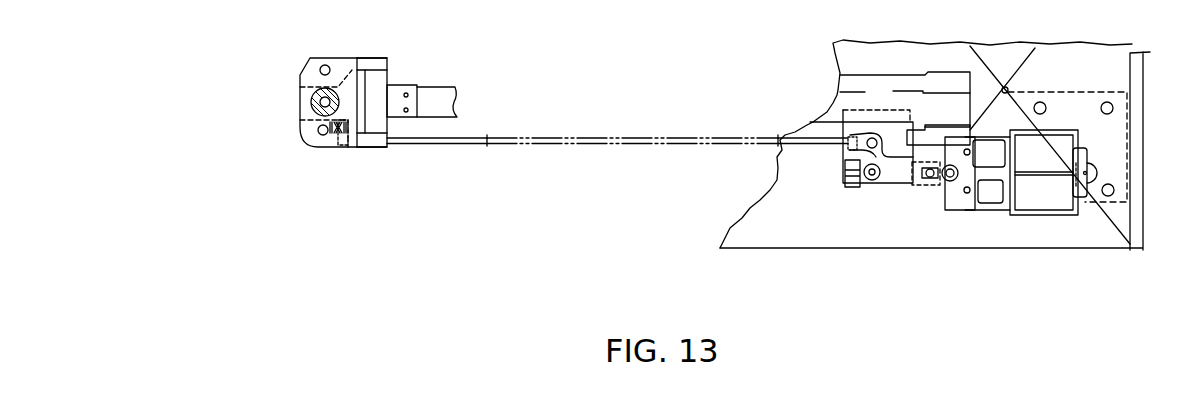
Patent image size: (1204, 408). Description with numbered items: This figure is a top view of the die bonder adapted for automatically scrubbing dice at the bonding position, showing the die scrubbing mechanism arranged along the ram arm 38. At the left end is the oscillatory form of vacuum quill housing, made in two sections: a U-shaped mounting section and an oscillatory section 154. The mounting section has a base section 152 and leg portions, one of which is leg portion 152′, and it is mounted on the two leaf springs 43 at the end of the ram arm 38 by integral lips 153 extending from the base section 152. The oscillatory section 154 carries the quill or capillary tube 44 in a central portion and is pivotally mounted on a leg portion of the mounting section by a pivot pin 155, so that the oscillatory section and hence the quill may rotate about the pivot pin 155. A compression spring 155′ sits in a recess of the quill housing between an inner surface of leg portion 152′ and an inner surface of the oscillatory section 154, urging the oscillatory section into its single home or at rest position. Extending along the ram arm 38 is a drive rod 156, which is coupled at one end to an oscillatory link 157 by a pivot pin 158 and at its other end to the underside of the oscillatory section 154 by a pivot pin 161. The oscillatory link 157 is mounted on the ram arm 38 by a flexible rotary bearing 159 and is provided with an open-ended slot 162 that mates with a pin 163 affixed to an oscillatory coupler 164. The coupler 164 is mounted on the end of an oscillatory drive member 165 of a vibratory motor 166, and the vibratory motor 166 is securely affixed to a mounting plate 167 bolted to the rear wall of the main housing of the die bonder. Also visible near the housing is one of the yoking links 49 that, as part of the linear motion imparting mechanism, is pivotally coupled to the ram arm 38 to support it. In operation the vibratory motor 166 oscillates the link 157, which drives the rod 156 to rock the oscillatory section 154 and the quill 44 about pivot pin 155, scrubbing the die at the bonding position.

The ram arm 38 is at (863, 92).
The leaf springs 43 is at (447, 88).
The capillary tube 44 is at (316, 100).
The yoking link 49 is at (918, 133).
The base section 152 is at (384, 128).
The leg portion 152′ is at (362, 147).
The integral lips 153 is at (397, 85).
The oscillatory section 154 is at (303, 90).
The pivot pin 155 is at (323, 65).
The compression spring 155′ is at (333, 135).
The drive rod 156 is at (470, 143).
The oscillatory link 157 is at (863, 190).
The pivot pin 158 is at (852, 145).
The flexible rotary bearing 159 is at (864, 175).
The pivot pin 161 is at (319, 131).
The open-ended slot 162 is at (928, 177).
The pin 163 is at (930, 180).
The oscillatory coupler 164 is at (955, 198).
The oscillatory drive member 165 is at (987, 175).
The vibratory motor 166 is at (1040, 197).
The mounting plate 167 is at (1006, 90).